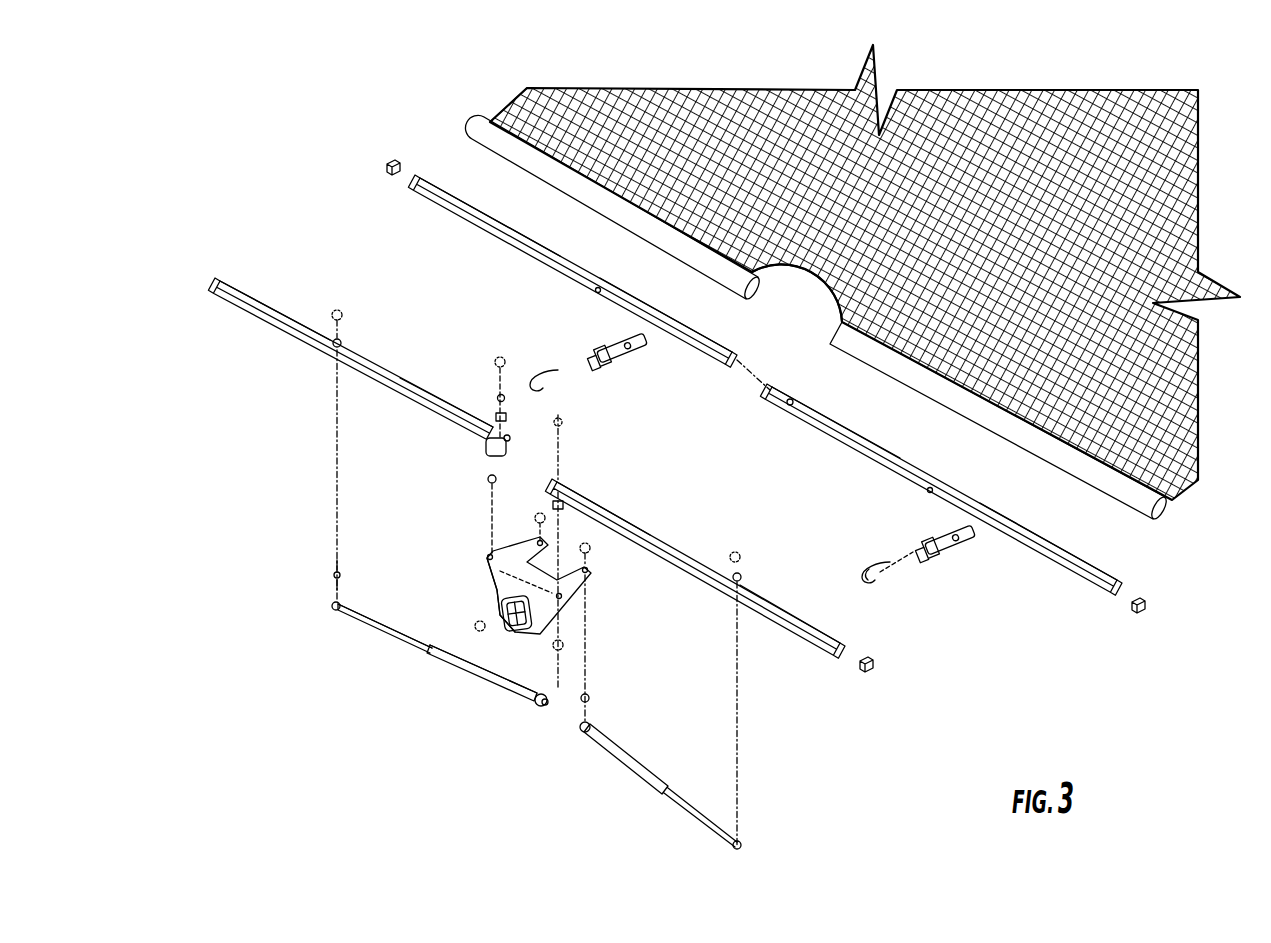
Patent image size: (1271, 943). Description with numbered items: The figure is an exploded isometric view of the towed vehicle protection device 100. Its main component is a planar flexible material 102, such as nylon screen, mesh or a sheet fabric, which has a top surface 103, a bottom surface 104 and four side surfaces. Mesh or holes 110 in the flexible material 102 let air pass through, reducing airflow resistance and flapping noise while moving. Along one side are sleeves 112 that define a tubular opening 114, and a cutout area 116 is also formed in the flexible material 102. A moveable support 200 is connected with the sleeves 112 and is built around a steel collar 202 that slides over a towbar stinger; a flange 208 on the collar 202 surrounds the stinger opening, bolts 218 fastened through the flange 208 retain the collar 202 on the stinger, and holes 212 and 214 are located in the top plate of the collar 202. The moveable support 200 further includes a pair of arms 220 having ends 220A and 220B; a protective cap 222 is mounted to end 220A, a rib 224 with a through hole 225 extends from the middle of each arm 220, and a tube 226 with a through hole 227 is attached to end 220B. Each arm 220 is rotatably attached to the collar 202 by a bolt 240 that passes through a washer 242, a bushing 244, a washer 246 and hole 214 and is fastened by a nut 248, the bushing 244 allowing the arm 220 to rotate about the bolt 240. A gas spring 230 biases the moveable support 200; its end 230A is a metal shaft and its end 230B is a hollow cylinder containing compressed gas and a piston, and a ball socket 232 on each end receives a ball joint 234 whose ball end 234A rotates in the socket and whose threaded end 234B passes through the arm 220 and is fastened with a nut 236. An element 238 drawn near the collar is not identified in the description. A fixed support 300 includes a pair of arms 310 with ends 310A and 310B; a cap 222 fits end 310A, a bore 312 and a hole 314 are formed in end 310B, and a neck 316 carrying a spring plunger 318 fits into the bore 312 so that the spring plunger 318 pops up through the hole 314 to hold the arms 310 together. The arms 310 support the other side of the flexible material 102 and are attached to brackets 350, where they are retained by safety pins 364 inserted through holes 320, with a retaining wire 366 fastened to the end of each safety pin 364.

The protection device 100 is at (264, 166).
The flexible material 102 is at (510, 122).
The top surface 103 is at (500, 129).
The bottom surface 104 is at (1175, 517).
The mesh 110 is at (962, 390).
The sleeves 112 is at (497, 148).
The tubular opening 114 is at (753, 294).
The cutout area 116 is at (818, 322).
The moveable support 200 is at (877, 729).
The collar 202 is at (487, 556).
The flange 208 is at (487, 581).
The hole 212 is at (590, 572).
The hole 214 is at (564, 598).
The bolts 218 is at (474, 627).
The arms 220 is at (377, 354).
The end 220A is at (238, 280).
The end 220B is at (440, 406).
The protective cap 222 is at (880, 668).
The rib 224 is at (345, 336).
The through hole 225 is at (334, 340).
The tube 226 is at (488, 452).
The through hole 227 is at (511, 441).
The gas spring 230 is at (451, 668).
The end 230A is at (373, 628).
The end 230B is at (490, 686).
The ball socket 232 is at (334, 611).
The ball joint 234 is at (334, 575).
The ball end 234A is at (334, 579).
The threaded end 234B is at (334, 572).
The nut 236 is at (333, 309).
The fastener 238 is at (537, 514).
The bolts 240 is at (504, 364).
The washer 242 is at (505, 401).
The bushing 244 is at (507, 421).
The washer 246 is at (487, 480).
The nut 248 is at (496, 599).
The fixed support 300 is at (1074, 632).
The arms 310 is at (525, 259).
The end 310A is at (696, 328).
The end 310B is at (447, 209).
The bore 312 is at (735, 380).
The hole 314 is at (718, 371).
The neck 316 is at (768, 402).
The spring plunger 318 is at (789, 412).
The hole 320 is at (594, 290).
The brackets 350 is at (608, 336).
The safety pins 364 is at (890, 580).
The retaining wire 366 is at (876, 562).